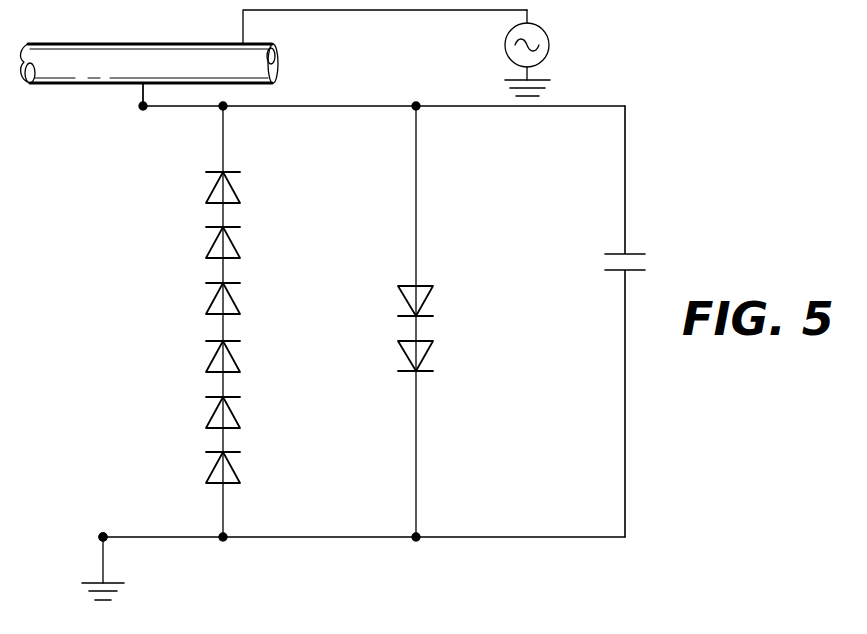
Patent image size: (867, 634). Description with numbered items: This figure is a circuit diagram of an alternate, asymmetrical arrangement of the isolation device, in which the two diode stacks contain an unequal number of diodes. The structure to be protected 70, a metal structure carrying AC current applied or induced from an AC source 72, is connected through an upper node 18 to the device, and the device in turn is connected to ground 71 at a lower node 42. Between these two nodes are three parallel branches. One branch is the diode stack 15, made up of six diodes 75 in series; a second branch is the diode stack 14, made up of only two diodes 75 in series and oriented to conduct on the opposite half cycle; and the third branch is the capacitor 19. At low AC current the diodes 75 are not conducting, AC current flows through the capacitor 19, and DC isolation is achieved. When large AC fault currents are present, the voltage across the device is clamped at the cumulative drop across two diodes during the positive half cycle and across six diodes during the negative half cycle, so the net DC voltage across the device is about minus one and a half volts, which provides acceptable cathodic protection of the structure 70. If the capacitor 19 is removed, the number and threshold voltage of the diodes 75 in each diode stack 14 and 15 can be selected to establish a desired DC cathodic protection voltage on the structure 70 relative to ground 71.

The structure to be protected 70 is at (279, 52).
The AC source 72 is at (550, 47).
The tube electrode lead 18 is at (145, 108).
The diode stack 15 is at (337, 230).
The diode stack 14 is at (480, 255).
The diode 75 is at (236, 192).
The capacitor 19 is at (645, 253).
The output node 42 is at (101, 534).
The ground 71 is at (125, 583).